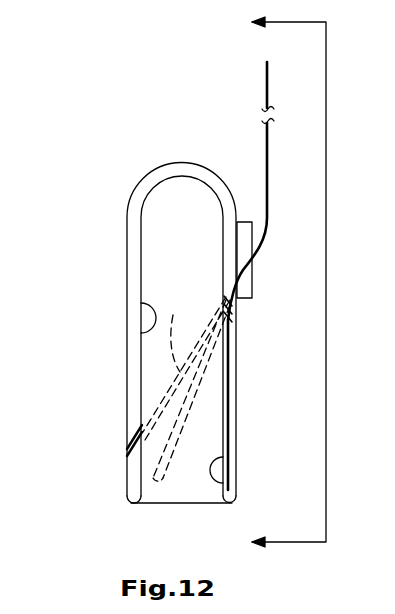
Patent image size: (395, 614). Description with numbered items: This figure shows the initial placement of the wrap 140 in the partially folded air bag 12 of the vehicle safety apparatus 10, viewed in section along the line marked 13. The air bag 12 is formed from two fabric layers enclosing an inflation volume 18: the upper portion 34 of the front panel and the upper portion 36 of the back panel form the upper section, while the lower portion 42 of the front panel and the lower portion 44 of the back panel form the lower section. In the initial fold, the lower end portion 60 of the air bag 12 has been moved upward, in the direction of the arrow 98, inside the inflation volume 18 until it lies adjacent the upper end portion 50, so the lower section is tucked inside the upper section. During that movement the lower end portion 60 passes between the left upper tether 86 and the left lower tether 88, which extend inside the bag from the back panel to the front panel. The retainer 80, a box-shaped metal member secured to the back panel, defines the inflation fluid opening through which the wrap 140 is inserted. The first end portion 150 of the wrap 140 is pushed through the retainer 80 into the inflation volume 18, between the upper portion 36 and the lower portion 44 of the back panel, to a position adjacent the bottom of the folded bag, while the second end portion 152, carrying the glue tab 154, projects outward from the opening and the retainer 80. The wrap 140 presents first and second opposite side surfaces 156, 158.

The vehicle safety apparatus 10 is at (87, 190).
The air bag 12 is at (137, 186).
The section line 13- 13 is at (276, 283).
The inflation volume 18 is at (137, 372).
The upper portion of the front panel 34 is at (127, 257).
The upper portion of the back panel 36 is at (236, 362).
The lower portion of the front panel 42 is at (148, 333).
The lower portion of the back panel 44 is at (236, 482).
The upper end portion of the air bag 50 is at (186, 162).
The lower end portion of the air bag 60 is at (180, 178).
The retainer 80 is at (252, 268).
The left upper tether 86 is at (186, 365).
The left lower tether 88 is at (187, 411).
The arrow 98 is at (65, 478).
The wrap 140 is at (268, 178).
The first end portion of the wrap 150 is at (236, 459).
The second end portion of the wrap 152 is at (266, 88).
The glue tab 154 is at (267, 62).
The first side surface of the wrap 156 is at (268, 149).
The second side surface of the wrap 158 is at (265, 167).